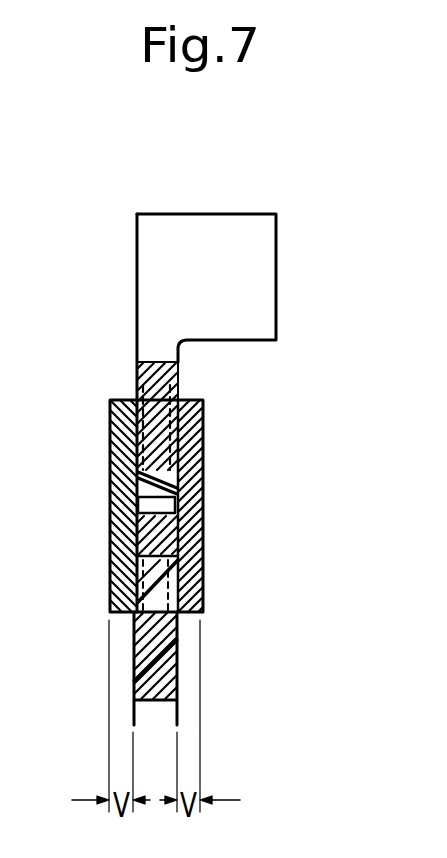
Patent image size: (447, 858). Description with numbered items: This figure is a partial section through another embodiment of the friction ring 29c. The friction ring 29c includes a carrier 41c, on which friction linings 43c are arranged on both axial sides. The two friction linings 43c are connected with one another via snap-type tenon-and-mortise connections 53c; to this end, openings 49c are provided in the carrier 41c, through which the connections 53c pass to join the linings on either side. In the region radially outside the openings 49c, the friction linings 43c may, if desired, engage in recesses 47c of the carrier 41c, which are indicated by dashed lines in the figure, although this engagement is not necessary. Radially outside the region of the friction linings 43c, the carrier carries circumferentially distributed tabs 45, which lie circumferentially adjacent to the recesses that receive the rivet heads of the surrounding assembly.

The friction ring 29c is at (115, 219).
The tabs 45 is at (268, 275).
The recesses 47c is at (138, 392).
The friction linings 43c is at (118, 440).
The snap-type tenon-and-mortise connections 53c is at (162, 505).
The openings 49c is at (136, 568).
The carrier 41c is at (150, 672).